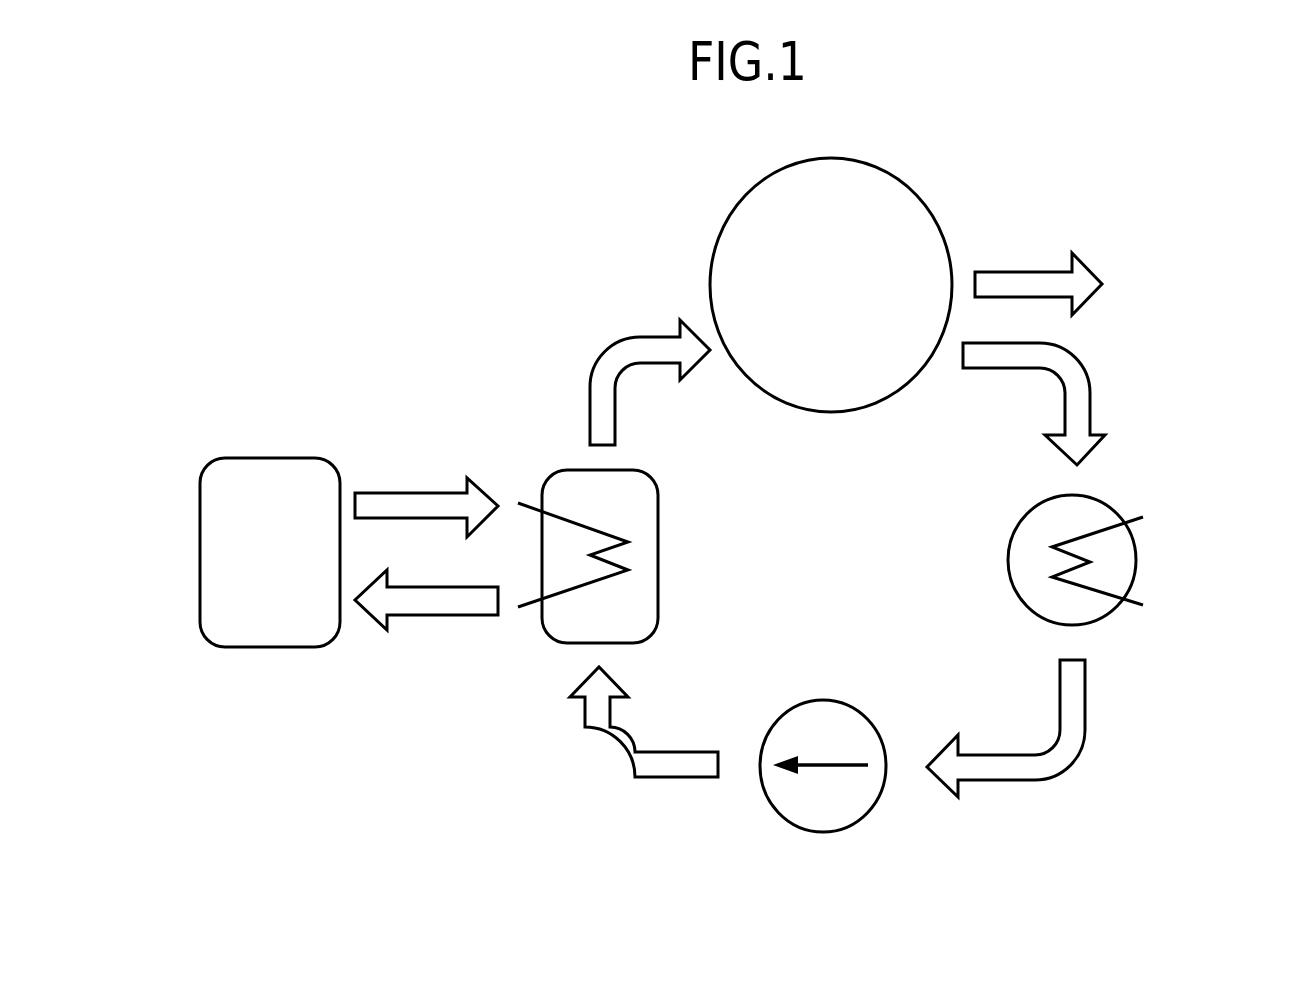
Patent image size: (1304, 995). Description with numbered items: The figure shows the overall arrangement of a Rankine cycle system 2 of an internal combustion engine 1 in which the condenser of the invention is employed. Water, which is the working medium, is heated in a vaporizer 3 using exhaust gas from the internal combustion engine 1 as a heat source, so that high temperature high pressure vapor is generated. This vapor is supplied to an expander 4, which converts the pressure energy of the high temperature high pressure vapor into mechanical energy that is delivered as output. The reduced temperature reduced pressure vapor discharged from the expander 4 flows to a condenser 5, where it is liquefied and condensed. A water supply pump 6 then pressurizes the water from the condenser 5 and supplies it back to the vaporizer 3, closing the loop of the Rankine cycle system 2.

The internal combustion engine 1 is at (277, 480).
The Rankine cycle system 2 is at (640, 275).
The vaporizer 3 is at (565, 488).
The expander 4 is at (920, 223).
The condenser 5 is at (1093, 510).
The water supply pump 6 is at (835, 813).